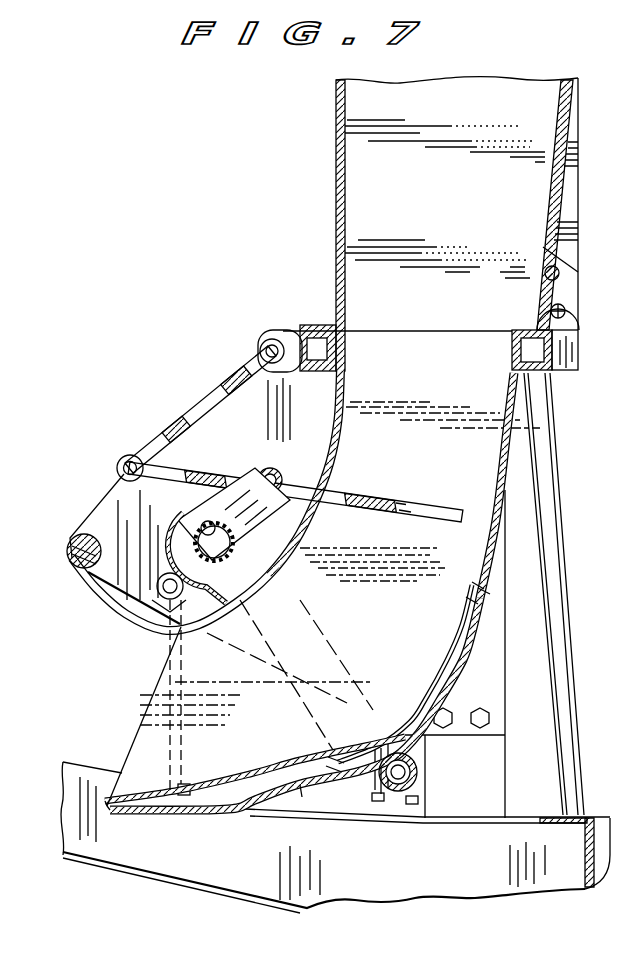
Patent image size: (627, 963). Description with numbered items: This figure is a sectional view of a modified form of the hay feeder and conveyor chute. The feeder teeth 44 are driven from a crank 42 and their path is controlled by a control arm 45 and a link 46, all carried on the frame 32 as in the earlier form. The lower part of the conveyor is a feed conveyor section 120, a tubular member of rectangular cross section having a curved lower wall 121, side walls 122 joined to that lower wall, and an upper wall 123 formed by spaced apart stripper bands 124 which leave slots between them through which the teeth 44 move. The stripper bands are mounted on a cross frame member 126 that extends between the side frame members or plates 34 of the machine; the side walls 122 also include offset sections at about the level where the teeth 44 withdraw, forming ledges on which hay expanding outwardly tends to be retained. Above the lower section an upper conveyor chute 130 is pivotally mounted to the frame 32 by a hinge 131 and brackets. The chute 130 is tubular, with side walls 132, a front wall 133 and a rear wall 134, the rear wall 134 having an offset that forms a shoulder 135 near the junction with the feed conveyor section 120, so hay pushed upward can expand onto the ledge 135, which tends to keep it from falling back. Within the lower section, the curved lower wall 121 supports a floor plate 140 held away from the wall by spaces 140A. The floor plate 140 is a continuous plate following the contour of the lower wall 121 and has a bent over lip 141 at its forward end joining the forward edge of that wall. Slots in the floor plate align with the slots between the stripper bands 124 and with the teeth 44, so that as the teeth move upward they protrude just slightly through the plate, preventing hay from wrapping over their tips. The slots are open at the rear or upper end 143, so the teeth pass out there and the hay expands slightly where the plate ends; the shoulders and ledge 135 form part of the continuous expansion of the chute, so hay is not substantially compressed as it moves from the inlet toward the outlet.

The upper conveyor chute 130 is at (335, 231).
The hinge 131 is at (572, 306).
The side walls 132 is at (455, 108).
The front wall 133 is at (336, 129).
The rear wall 134 is at (565, 130).
The shoulder 135 is at (528, 332).
The frame 32 is at (300, 328).
The side frame members 34 is at (268, 398).
The link 46 is at (222, 390).
The control arm 45 is at (221, 464).
The feeder teeth 44 is at (427, 508).
The crank 42 is at (305, 527).
The upper wall 123 is at (334, 452).
The cross frame member 126 is at (380, 489).
The stripper bands 124 is at (293, 557).
The feed conveyor section 120 is at (523, 537).
The rear end of floor plate 143 is at (440, 620).
The spaces 140A is at (490, 608).
The curved lower wall 121 is at (467, 660).
The side walls 122 is at (200, 690).
The bent over lip 141 is at (140, 803).
The floor plate 140 is at (262, 774).